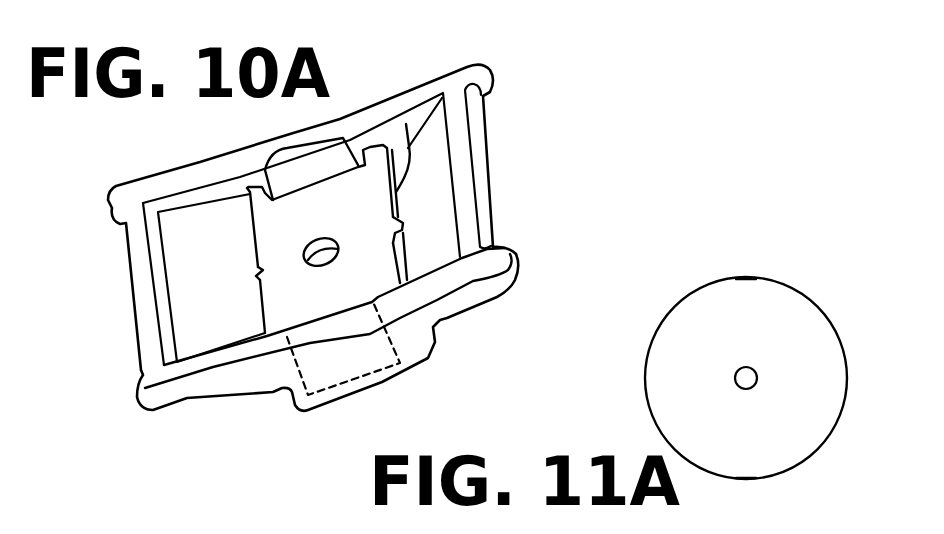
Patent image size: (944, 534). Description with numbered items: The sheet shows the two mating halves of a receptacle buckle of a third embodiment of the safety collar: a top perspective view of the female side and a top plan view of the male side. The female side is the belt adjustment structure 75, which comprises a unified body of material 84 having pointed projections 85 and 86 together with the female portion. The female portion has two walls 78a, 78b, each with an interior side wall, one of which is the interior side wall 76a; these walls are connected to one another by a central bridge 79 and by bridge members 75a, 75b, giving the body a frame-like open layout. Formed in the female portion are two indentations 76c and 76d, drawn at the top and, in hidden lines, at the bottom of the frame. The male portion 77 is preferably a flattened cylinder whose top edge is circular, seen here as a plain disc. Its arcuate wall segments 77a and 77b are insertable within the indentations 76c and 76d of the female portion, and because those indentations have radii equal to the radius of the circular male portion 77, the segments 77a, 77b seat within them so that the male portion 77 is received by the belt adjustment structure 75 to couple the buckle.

In FIG. 10A, the belt adjustment structure 75 is at (481, 232).
In FIG. 10A, the bridge member 75a is at (147, 303).
In FIG. 10A, the bridge member 75b is at (477, 142).
In FIG. 10A, the wall 78a is at (182, 171).
In FIG. 10A, the wall 78b is at (287, 388).
In FIG. 10A, the central bridge 79 is at (262, 307).
In FIG. 10A, the pointed projection 85 is at (250, 276).
In FIG. 10A, the pointed projection 86 is at (437, 208).
In FIG. 10A, the indentation 76c is at (300, 183).
In FIG. 10A, the interior side wall 76a is at (349, 140).
In FIG. 10A, the indentation 76d is at (372, 372).
In FIG. 10A, the unified body of material 84 is at (126, 428).
In FIG. 11A, the male portion 77 is at (790, 270).
In FIG. 11A, the arcuate wall segment 77a is at (745, 278).
In FIG. 11A, the arcuate wall segment 77b is at (747, 479).